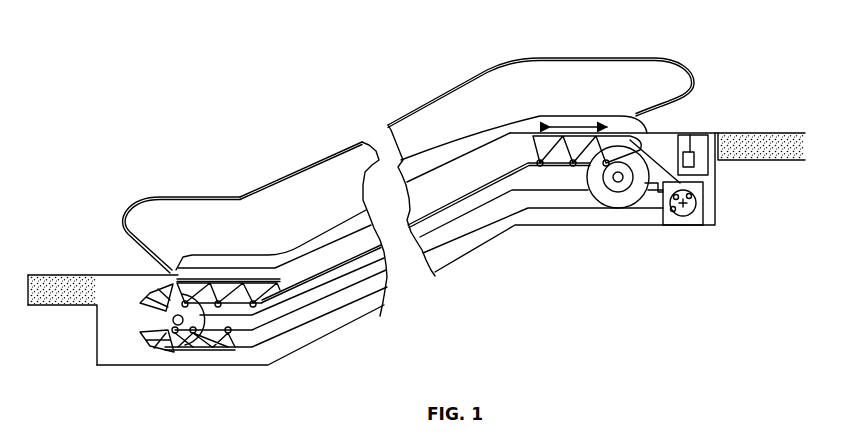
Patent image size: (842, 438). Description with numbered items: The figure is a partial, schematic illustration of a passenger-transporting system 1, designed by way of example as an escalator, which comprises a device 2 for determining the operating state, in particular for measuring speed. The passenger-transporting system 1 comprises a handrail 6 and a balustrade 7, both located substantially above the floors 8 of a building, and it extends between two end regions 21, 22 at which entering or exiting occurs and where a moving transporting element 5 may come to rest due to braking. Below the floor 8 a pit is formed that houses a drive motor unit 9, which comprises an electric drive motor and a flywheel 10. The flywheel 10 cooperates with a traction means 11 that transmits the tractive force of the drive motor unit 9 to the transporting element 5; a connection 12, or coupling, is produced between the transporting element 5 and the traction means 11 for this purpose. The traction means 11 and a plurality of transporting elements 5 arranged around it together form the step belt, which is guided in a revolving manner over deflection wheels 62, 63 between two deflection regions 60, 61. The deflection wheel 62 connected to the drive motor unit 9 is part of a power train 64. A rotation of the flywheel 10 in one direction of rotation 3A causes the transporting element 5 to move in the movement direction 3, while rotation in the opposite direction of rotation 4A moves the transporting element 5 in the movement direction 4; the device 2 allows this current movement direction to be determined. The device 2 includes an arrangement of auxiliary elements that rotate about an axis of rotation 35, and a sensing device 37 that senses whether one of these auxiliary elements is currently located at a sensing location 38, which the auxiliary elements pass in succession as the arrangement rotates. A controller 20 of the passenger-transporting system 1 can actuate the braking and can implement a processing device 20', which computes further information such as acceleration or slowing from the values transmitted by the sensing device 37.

The passenger-transporting system 1 is at (303, 138).
The device for determining the operating state 2 is at (684, 230).
The movement direction 3 is at (558, 124).
The direction of rotation 3A is at (702, 192).
The movement direction 4 is at (598, 124).
The direction of rotation 4A is at (692, 202).
The transporting element 5 is at (262, 280).
The handrail 6 is at (481, 72).
The balustrade 7 is at (173, 212).
The floor 8 is at (55, 268).
The drive motor unit 9 is at (688, 218).
The flywheel 10 is at (690, 214).
The traction means 11 is at (270, 364).
The connection 12 is at (652, 193).
The controller 20 is at (582, 177).
The processing device 20' is at (724, 171).
The end region 21 is at (134, 267).
The end region 22 is at (638, 112).
The axis of rotation 35 is at (690, 206).
The sensing device 37 is at (640, 196).
The sensing location 38 is at (672, 213).
The deflection region 60 is at (606, 187).
The deflection region 61 is at (196, 324).
The deflection wheel 62 is at (618, 196).
The deflection wheel 63 is at (200, 315).
The power train 64 is at (654, 155).